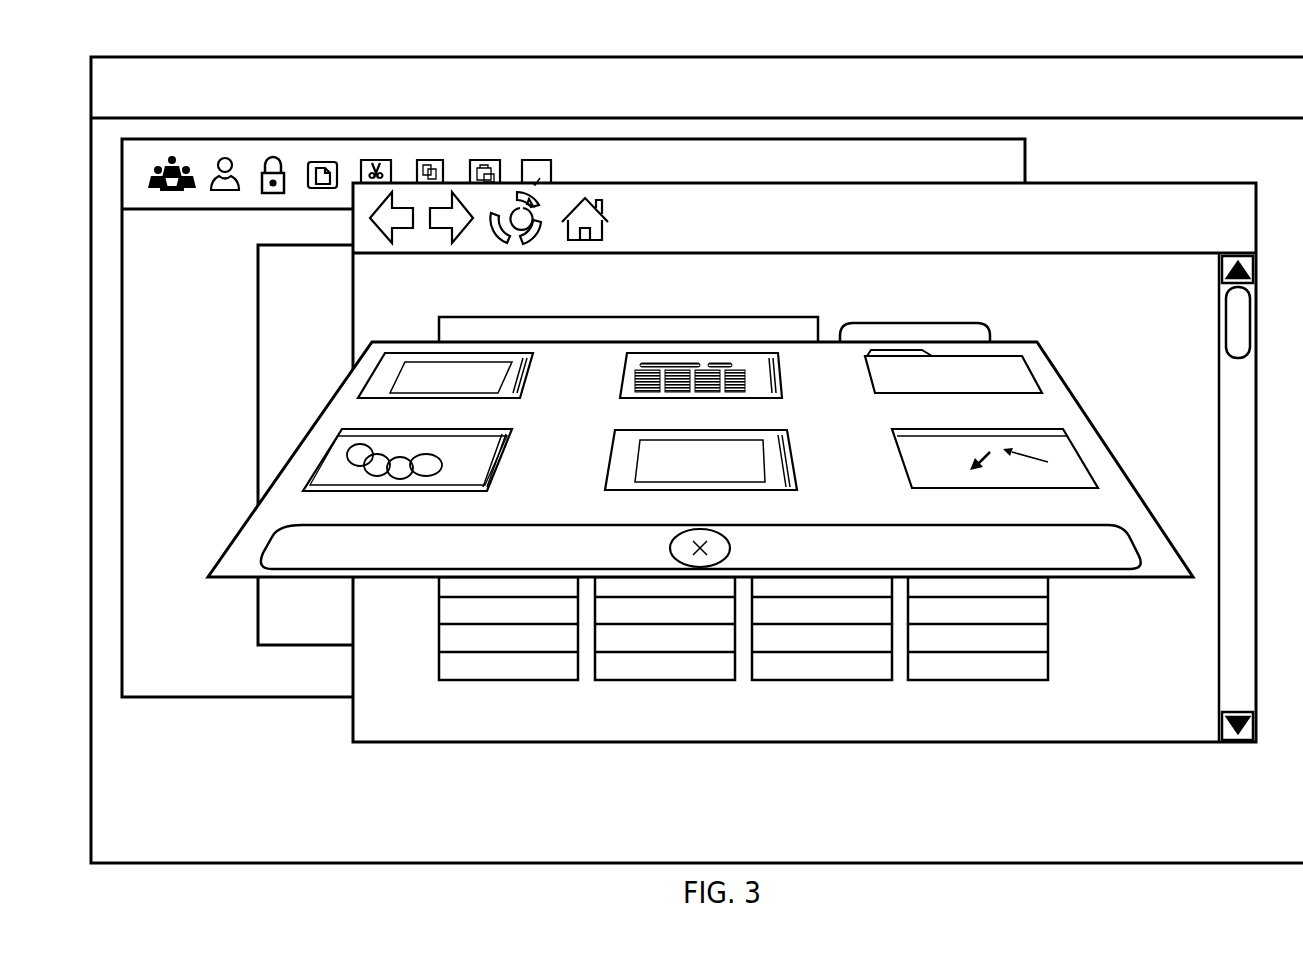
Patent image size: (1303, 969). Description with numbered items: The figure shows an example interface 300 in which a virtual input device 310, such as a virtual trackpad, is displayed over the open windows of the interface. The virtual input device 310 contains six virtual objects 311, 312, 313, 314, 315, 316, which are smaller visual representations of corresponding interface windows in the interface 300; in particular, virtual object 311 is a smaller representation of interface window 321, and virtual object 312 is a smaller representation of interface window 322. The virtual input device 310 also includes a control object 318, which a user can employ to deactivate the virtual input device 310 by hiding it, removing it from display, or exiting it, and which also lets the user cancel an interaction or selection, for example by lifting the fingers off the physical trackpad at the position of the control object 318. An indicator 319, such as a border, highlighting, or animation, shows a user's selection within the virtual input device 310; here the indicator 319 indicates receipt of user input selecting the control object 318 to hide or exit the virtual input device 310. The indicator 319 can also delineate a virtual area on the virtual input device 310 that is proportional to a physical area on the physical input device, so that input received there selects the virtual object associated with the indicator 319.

The interface 300 is at (207, 52).
The virtual input device 310 is at (1050, 358).
The virtual object 311 is at (480, 387).
The virtual object 312 is at (737, 382).
The virtual object 313 is at (937, 382).
The virtual object 314 is at (458, 470).
The virtual object 315 is at (757, 462).
The virtual object 316 is at (997, 477).
The control object 318 is at (716, 548).
The indicator 319 is at (585, 525).
The interface window 321 is at (1028, 147).
The interface window 322 is at (1140, 182).